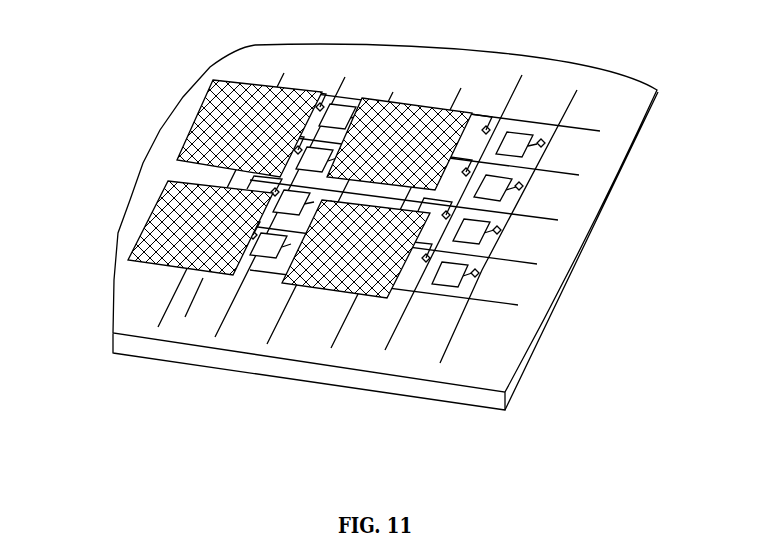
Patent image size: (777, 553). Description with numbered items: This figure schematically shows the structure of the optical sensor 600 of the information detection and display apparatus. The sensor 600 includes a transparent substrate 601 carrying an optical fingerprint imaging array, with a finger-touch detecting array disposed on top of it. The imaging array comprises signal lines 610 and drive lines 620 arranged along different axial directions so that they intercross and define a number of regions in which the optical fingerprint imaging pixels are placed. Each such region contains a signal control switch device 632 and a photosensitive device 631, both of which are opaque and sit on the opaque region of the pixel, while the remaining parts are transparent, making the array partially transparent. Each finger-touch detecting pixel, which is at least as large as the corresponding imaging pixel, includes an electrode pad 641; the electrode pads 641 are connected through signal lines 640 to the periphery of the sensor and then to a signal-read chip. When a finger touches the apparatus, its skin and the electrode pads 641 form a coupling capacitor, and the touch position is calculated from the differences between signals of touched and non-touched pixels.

The sensor 600 is at (675, 72).
The transparent substrate 601 is at (603, 167).
The signal lines 610 is at (168, 300).
The drive lines 620 is at (578, 130).
The photosensitive device 631 is at (448, 275).
The signal control switch device 632 is at (478, 274).
The signal lines 640 is at (205, 276).
The electrode pad 641 is at (178, 203).